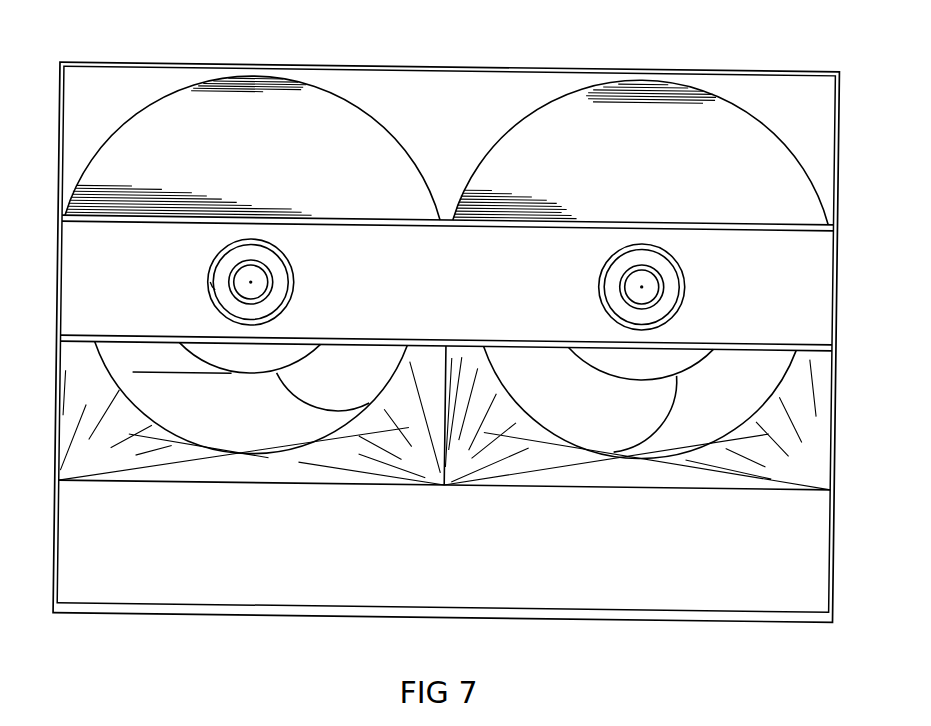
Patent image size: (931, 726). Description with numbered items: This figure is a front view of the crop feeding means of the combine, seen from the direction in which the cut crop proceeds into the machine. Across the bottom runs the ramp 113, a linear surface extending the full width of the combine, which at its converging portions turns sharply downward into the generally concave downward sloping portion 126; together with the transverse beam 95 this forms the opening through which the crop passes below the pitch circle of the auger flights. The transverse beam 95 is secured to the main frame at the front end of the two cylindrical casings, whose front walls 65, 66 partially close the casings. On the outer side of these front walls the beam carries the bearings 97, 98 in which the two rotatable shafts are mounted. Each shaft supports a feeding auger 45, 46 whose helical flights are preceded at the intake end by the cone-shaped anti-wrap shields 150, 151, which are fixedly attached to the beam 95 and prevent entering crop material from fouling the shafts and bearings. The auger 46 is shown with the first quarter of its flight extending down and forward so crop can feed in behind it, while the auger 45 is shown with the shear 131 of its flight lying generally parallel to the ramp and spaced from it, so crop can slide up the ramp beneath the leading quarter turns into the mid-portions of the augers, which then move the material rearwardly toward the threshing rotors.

The ramp 113 is at (223, 614).
The downward sloping portion 126 is at (663, 595).
The transverse beam 95 is at (449, 290).
The front wall 65 is at (229, 103).
The front wall 66 is at (620, 108).
The bearing 97 is at (272, 285).
The bearing 98 is at (662, 284).
The shear 131 is at (200, 376).
The anti-wrap shield 150 is at (266, 362).
The anti-wrap shield 151 is at (630, 370).
The feeding auger 45 is at (328, 398).
The feeding auger 46 is at (641, 426).